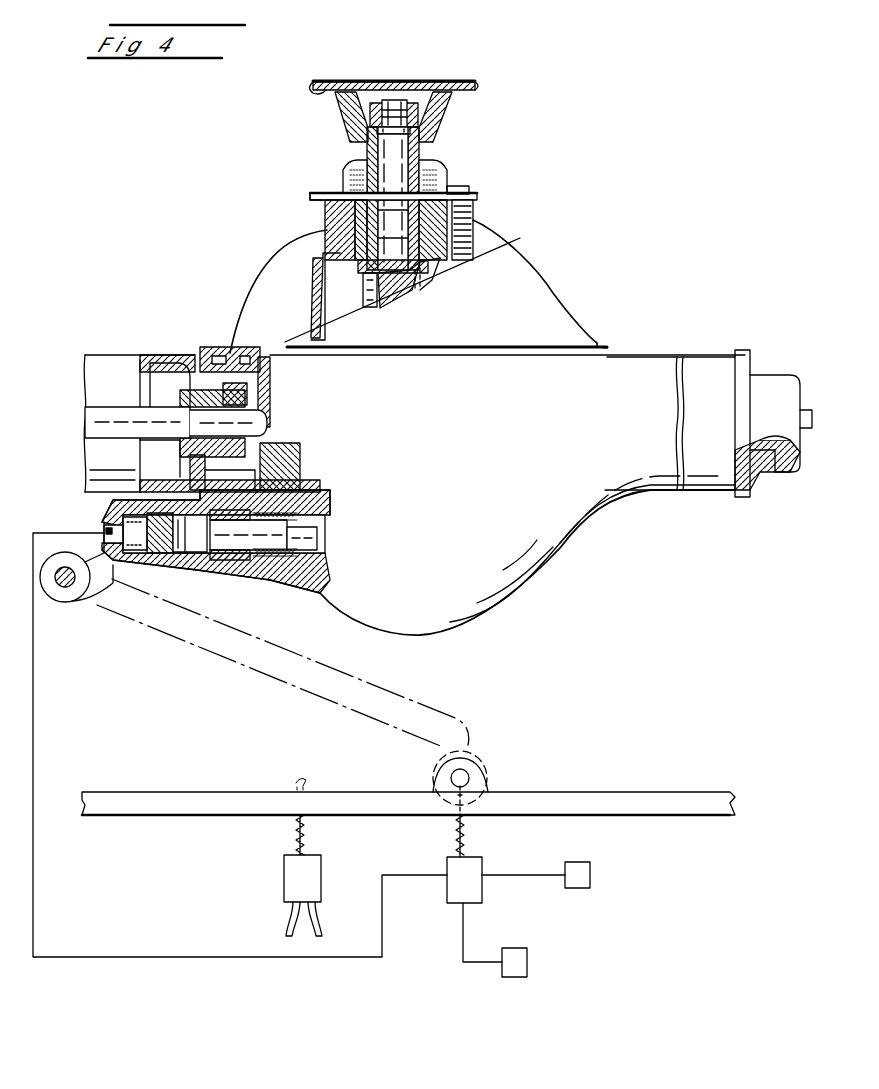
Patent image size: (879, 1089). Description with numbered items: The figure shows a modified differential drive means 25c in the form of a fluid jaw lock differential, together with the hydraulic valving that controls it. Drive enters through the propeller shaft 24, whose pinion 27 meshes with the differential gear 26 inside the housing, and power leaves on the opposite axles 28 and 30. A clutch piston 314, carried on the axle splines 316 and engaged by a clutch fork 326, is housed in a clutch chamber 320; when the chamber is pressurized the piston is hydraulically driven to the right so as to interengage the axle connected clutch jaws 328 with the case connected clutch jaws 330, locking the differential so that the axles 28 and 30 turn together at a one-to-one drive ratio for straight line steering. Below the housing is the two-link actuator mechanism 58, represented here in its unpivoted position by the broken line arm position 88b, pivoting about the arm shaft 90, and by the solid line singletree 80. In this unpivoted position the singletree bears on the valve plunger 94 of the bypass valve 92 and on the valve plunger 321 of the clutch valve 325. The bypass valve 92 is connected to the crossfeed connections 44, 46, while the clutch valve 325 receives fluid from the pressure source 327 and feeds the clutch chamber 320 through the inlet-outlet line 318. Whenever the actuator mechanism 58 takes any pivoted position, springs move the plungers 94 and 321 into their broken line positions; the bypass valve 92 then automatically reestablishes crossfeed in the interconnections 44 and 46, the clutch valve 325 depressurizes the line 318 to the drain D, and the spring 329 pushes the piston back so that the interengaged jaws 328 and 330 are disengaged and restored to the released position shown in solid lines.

The propeller shaft 24 is at (475, 84).
The differential drive means 25c is at (243, 283).
The differential gear 26 is at (432, 283).
The pinion 27 is at (455, 266).
The axle 28 is at (158, 419).
The axle 30 is at (810, 410).
The crossfeed connection 44 is at (287, 914).
The crossfeed connection 46 is at (321, 917).
The two-link actuator mechanism 58 is at (420, 756).
The singletree 80 is at (215, 791).
The arm position 88b is at (212, 641).
The arm shaft 90 is at (70, 589).
The bypass valve 92 is at (283, 867).
The valve plunger 94 is at (292, 823).
The clutch piston 314 is at (183, 363).
The axle splines 316 is at (220, 450).
The inlet-outlet line 318 is at (80, 957).
The clutch chamber 320 is at (133, 529).
The valve plunger 321 is at (455, 832).
The clutch valve 325 is at (510, 852).
The clutch fork 326 is at (223, 476).
The pressure source 327 is at (591, 876).
The axle connected clutch jaws 328 is at (247, 377).
The spring 329 is at (258, 574).
The case connected clutch jaws 330 is at (258, 372).
The drain D is at (502, 971).